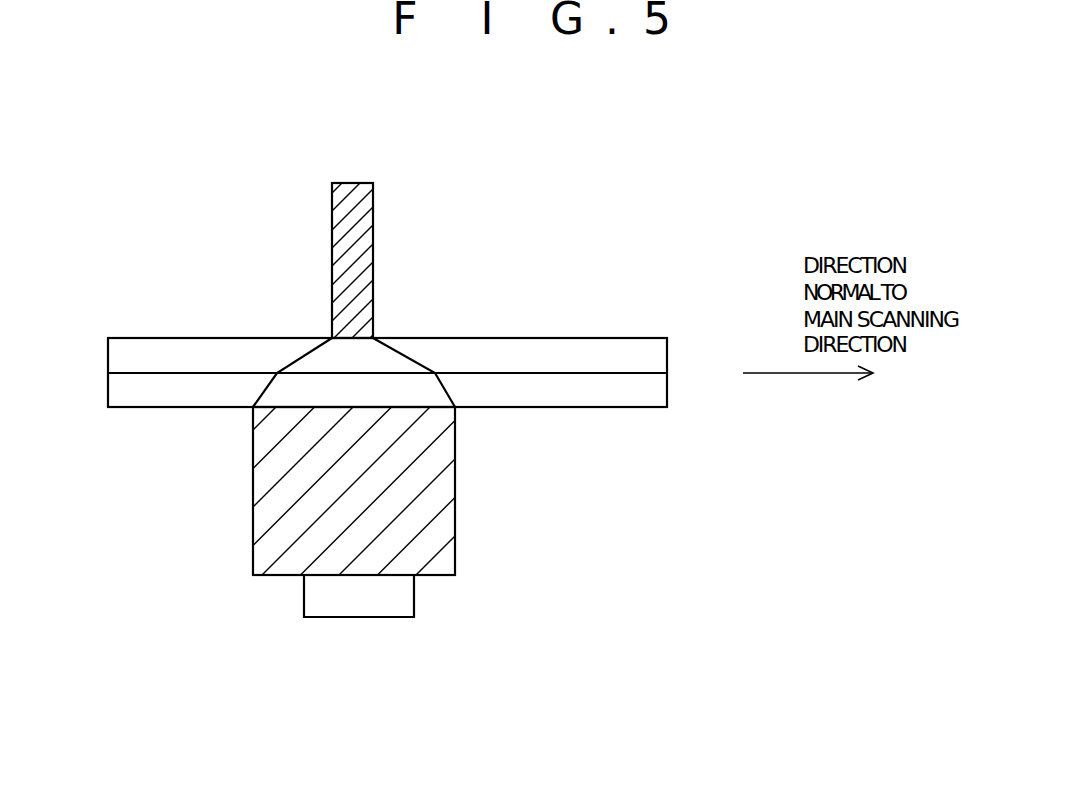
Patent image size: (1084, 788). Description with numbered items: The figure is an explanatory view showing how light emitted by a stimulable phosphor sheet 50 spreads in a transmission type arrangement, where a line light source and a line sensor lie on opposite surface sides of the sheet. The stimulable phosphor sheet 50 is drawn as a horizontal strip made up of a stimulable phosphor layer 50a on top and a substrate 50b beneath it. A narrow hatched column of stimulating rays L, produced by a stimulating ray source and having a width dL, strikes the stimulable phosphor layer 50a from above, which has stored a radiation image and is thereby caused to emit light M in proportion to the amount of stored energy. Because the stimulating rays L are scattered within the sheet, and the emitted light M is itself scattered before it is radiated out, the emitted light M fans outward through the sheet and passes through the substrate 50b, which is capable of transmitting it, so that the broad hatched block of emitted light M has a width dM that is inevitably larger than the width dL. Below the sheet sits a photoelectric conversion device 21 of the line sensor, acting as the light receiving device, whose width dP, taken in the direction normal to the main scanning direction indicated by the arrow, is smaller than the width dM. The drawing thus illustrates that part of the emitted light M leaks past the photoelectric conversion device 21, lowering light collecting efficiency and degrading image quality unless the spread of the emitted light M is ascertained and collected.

The stimulable phosphor sheet 50 is at (95, 401).
The stimulable phosphor layer 50a is at (668, 356).
The substrate 50b is at (668, 383).
The stimulating rays L is at (375, 252).
The emitted light M is at (457, 505).
The photoelectric conversion device 21 is at (416, 599).
The width of the stimulating rays dL is at (373, 183).
The width of the photoelectric conversion device dP is at (304, 617).
The width of the emitted light dM is at (253, 575).